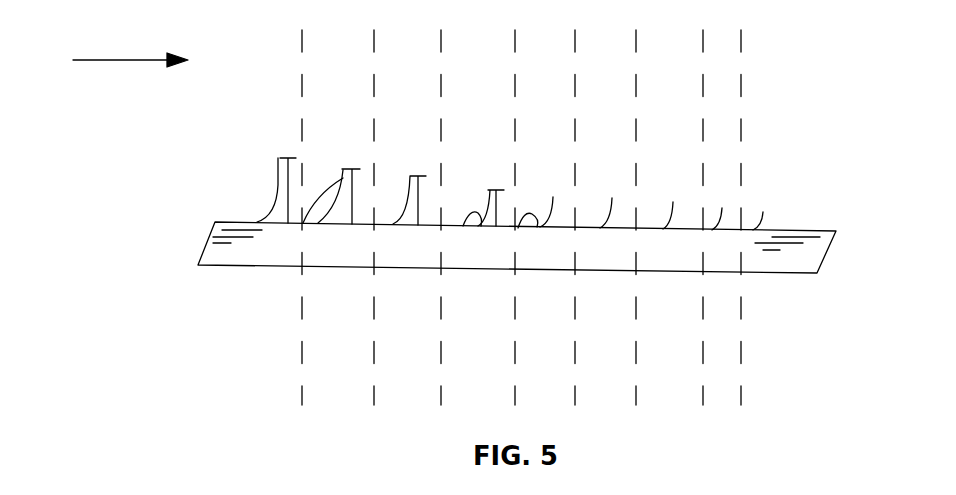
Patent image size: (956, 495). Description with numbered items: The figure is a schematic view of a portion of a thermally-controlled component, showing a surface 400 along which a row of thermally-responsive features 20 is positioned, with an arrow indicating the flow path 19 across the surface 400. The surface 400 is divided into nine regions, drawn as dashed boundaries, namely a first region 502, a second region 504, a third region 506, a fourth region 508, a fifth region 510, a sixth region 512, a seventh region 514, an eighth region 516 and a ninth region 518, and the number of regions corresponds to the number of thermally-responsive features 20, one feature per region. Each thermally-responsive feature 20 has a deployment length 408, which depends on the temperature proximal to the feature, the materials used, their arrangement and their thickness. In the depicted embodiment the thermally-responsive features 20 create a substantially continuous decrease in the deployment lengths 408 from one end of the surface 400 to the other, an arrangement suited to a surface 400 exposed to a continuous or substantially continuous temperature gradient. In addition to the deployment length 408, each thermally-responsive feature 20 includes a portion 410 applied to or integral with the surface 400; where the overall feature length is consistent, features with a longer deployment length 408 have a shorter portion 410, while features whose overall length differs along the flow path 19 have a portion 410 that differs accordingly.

The flow path 19 is at (140, 60).
The thermally-responsive features 20 is at (263, 201).
The surface 400 is at (208, 236).
The deployment length 408 is at (288, 193).
The portion applied to or integral with the surface 410 is at (463, 226).
The first region 502 is at (274, 305).
The second region 504 is at (363, 307).
The third region 506 is at (427, 309).
The fourth region 508 is at (512, 298).
The fifth region 510 is at (568, 298).
The sixth region 512 is at (623, 309).
The seventh region 514 is at (688, 309).
The eighth region 516 is at (742, 309).
The ninth region 518 is at (797, 309).